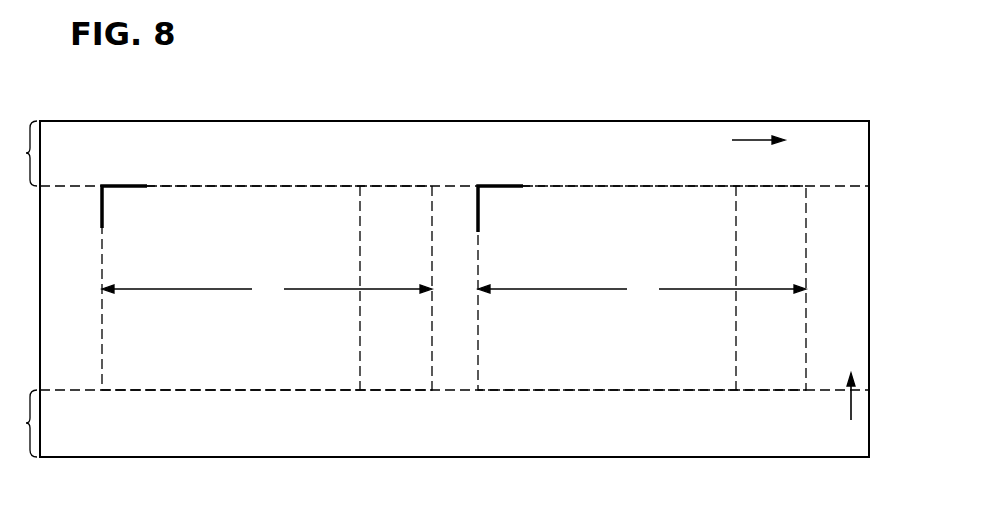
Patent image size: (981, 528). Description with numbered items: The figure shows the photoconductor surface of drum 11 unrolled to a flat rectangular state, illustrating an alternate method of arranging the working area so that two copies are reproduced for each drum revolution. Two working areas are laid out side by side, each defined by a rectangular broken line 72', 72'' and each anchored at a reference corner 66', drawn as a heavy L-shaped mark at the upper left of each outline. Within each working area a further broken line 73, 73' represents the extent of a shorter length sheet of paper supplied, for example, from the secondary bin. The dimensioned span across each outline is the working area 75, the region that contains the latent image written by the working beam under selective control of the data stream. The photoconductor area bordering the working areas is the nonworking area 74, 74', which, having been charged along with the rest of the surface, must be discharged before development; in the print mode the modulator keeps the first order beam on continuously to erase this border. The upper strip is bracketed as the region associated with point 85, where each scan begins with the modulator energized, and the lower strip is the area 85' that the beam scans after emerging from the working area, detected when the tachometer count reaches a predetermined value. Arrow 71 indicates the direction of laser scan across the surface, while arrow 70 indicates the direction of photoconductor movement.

The photoconductor drum 11 is at (310, 121).
The nonworking area 74 is at (454, 289).
The nonworking area 74' is at (461, 289).
The scan start point 85 is at (436, 153).
The trailing border area 85' is at (436, 423).
The broken line defining first working area 72' is at (288, 288).
The broken line defining second working area 72'' is at (668, 288).
The broken line for shorter paper sheet 73 is at (380, 288).
The broken line for shorter paper sheet 73' is at (760, 288).
The reference corner 66' is at (320, 188).
The working area 75 is at (454, 291).
The arrow indicating direction of laser scan 71 is at (752, 140).
The arrow indicating direction of photoconductor movement 70 is at (853, 406).